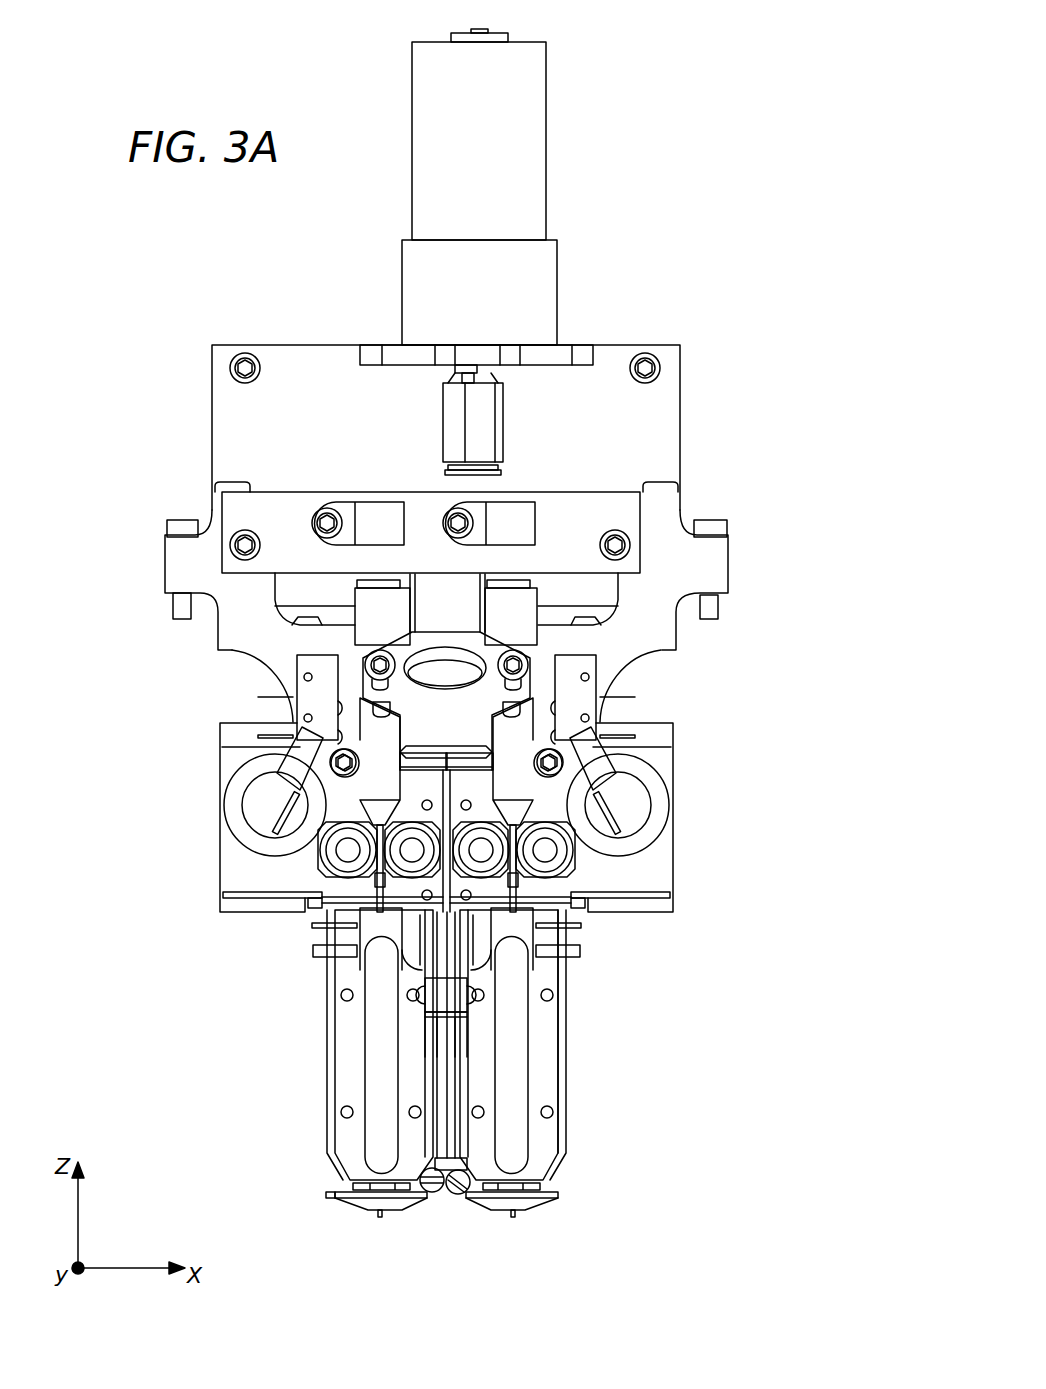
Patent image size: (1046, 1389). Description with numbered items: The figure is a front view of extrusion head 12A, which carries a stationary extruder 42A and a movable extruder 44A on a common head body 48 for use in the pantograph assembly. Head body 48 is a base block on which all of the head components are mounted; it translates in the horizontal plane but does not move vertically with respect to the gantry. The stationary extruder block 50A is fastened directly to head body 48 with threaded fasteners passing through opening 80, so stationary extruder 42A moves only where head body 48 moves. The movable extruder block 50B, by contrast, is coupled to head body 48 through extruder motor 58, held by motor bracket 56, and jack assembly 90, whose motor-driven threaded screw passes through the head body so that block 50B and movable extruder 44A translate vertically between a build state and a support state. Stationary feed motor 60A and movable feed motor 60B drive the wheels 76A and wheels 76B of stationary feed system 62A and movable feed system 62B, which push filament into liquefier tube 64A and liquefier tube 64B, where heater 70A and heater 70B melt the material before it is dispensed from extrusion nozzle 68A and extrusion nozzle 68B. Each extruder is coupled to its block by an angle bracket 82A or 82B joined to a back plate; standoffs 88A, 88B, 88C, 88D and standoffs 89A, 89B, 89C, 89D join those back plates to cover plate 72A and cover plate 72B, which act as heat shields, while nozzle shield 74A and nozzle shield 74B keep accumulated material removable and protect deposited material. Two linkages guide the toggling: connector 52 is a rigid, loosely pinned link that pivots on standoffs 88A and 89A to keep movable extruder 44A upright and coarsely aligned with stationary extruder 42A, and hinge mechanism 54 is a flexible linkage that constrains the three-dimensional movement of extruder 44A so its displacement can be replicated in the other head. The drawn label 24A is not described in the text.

The extrusion head 12A is at (728, 86).
The extruder motor 58 is at (557, 252).
The motor bracket 56 is at (660, 427).
The jack assembly 90 is at (518, 412).
The head body 48 is at (726, 578).
The opening 80 is at (277, 607).
The stationary extruder block 50A is at (220, 737).
The movable extruder block 50B is at (672, 737).
The stationary feed motor 60A is at (248, 828).
The movable feed motor 60B is at (665, 790).
The wheels 76A is at (340, 856).
The wheels 76B is at (596, 893).
The stationary feed system 62A is at (308, 890).
The movable feed system 62B is at (588, 920).
The liquefier tube 64A is at (340, 925).
The liquefier tube 64B is at (587, 938).
The heater 70A is at (340, 950).
The heater 70B is at (595, 948).
The connector 52 is at (425, 992).
The cover plate 72A is at (370, 1088).
The cover plate 72B is at (522, 1085).
The angle bracket 82A is at (410, 999).
The angle bracket 82B is at (568, 1032).
The standoff 88A is at (346, 1118).
The standoff 88B is at (347, 1000).
The standoff 88C is at (415, 1118).
The standoff 88D is at (327, 1199).
The standoff 89A is at (480, 1001).
The standoff 89B is at (550, 990).
The standoff 89C is at (548, 1118).
The standoff 89D is at (480, 1118).
The stationary extruder 42A is at (328, 1174).
The movable extruder 44A is at (578, 1122).
The nozzle shield 74A is at (357, 1211).
The nozzle shield 74B is at (538, 1211).
The extrusion nozzle 68A is at (381, 1217).
The extrusion nozzle 68B is at (514, 1217).
The hinge mechanism 54 is at (450, 1208).
The gripping pad 24A is at (566, 1218).